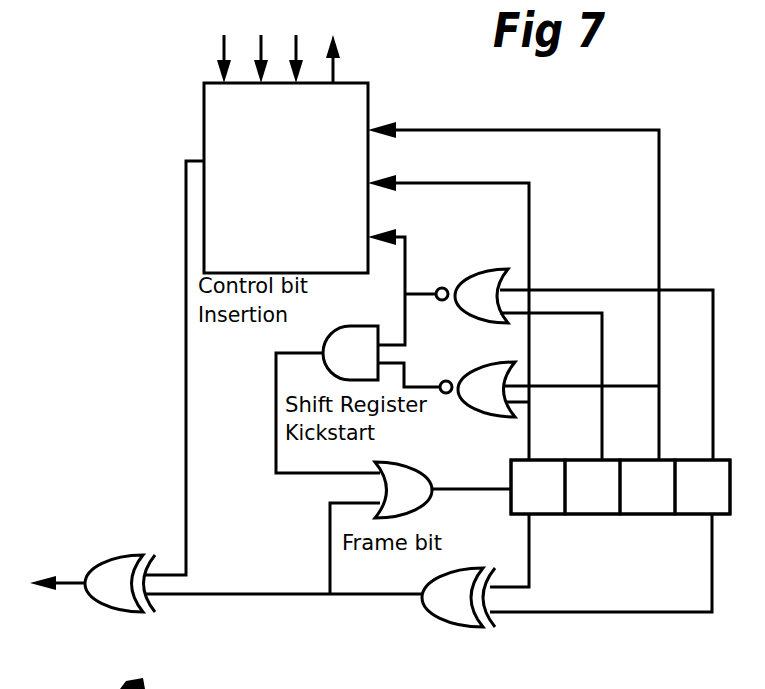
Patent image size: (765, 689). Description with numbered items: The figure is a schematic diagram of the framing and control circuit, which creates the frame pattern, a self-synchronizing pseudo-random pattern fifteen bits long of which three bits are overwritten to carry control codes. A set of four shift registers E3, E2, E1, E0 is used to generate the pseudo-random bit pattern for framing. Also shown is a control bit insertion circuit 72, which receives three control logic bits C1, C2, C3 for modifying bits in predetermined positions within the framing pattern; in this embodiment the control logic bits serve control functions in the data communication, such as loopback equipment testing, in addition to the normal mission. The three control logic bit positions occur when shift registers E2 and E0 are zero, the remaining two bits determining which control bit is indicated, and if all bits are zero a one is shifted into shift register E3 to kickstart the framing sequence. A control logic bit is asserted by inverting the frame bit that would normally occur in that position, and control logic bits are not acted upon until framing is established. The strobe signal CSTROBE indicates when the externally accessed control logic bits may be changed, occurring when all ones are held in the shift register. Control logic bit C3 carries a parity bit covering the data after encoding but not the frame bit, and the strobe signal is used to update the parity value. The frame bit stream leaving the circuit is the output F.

The control bit insertion circuit 72 is at (215, 105).
The control logic bit C1 is at (222, 45).
The control logic bit C2 is at (260, 45).
The control logic bit C3 is at (297, 45).
The control logic bit strobe signal CSTROBE is at (374, 45).
The shift register E3 is at (538, 487).
The shift register E2 is at (592, 487).
The shift register E1 is at (647, 487).
The shift register E0 is at (702, 487).
The frame output F is at (92, 574).